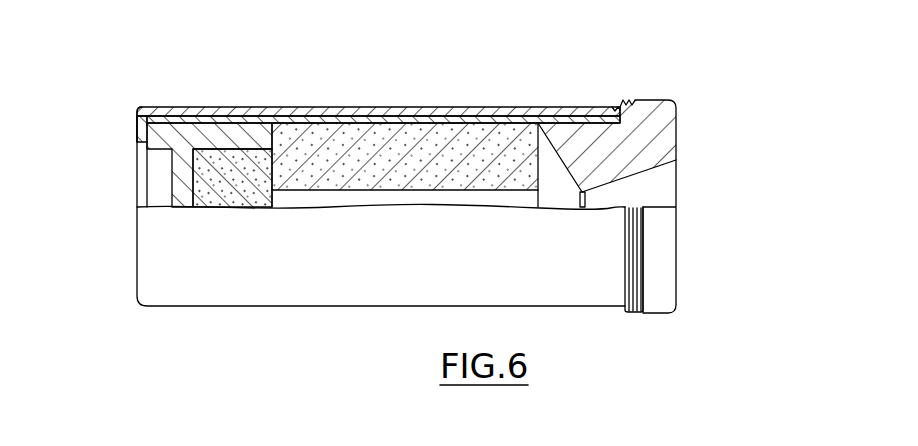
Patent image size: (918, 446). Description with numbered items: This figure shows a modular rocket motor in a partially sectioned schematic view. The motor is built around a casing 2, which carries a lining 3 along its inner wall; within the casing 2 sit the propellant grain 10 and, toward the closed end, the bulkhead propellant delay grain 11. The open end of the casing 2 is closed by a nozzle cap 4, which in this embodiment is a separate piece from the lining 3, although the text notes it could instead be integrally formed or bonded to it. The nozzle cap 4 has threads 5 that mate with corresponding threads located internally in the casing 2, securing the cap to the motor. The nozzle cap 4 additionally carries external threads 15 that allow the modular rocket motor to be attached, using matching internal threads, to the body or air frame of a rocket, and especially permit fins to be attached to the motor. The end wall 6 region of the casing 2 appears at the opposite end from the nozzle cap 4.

The casing 2 is at (275, 108).
The lining 3 is at (440, 118).
The nozzle cap 4 is at (660, 106).
The threads 5 is at (612, 112).
The end wall 6 is at (134, 117).
The propellant grain 10 is at (362, 128).
The bulkhead propellant delay grain 11 is at (227, 194).
The external threads 15 is at (637, 248).